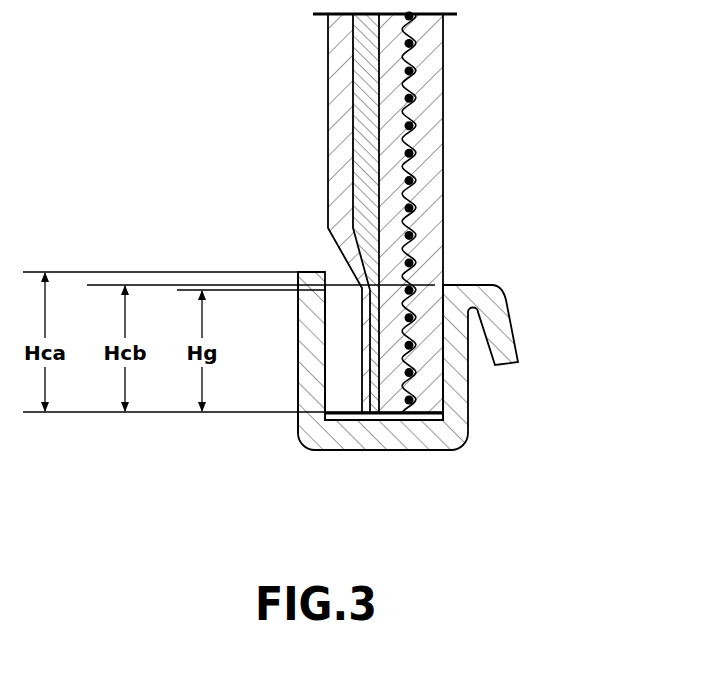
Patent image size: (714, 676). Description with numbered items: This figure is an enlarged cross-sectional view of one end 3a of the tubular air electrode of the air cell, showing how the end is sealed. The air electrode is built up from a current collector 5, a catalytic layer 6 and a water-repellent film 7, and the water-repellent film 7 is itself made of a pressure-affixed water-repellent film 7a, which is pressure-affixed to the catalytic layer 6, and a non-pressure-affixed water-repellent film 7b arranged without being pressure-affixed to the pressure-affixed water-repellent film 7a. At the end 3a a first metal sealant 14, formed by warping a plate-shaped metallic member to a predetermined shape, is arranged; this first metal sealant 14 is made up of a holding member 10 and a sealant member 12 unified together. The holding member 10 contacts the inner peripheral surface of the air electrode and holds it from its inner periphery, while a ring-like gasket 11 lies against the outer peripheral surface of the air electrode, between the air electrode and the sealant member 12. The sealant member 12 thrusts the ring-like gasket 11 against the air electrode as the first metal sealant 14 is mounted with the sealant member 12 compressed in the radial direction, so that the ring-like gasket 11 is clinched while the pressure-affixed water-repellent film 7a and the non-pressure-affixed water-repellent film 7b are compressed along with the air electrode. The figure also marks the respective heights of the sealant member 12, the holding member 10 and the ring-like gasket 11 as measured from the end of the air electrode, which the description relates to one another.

The water-repellent film 7 is at (290, 213).
The pressure-affixed water-repellent film 7a is at (338, 87).
The non-pressure-affixed water-repellent film 7b is at (356, 42).
The current collector 5 is at (416, 60).
The catalytic layer 6 is at (433, 125).
The holding member 10 is at (460, 413).
The sealant member 12 is at (308, 372).
The ring-like gasket 11 is at (343, 395).
The one end of the air electrode 3a is at (395, 395).
The first metal sealant 14 is at (444, 460).